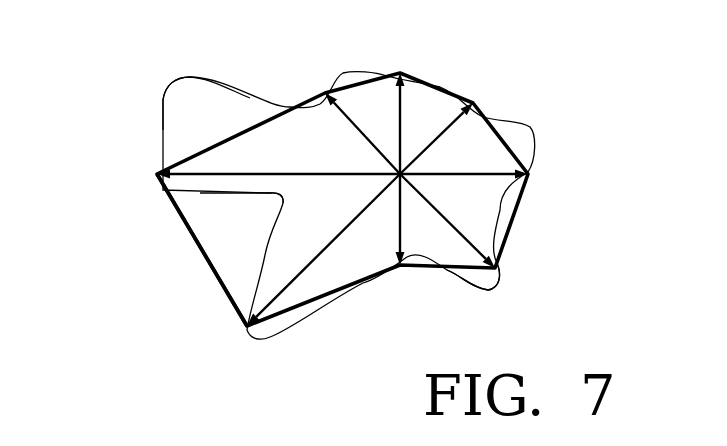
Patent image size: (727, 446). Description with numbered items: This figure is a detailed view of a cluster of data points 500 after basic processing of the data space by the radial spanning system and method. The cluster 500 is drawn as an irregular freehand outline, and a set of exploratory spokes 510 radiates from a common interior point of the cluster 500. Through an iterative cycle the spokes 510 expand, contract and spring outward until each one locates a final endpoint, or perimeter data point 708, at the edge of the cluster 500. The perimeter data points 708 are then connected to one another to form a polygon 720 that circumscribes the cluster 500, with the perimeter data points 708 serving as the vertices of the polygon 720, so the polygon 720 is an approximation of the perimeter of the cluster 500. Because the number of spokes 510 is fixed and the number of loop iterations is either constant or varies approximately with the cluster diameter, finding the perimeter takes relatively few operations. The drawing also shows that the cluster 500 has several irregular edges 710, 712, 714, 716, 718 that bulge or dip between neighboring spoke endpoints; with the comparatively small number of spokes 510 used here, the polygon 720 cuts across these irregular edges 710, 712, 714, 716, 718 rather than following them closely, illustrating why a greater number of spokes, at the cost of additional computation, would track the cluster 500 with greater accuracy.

The cluster of data points 500 is at (227, 113).
The exploratory spokes 510 is at (473, 170).
The perimeter data point 708 is at (533, 173).
The irregular edge 710 is at (497, 293).
The irregular edge 712 is at (250, 340).
The irregular edge 714 is at (277, 203).
The irregular edge 716 is at (153, 190).
The irregular edge 718 is at (170, 83).
The polygon 720 is at (203, 285).